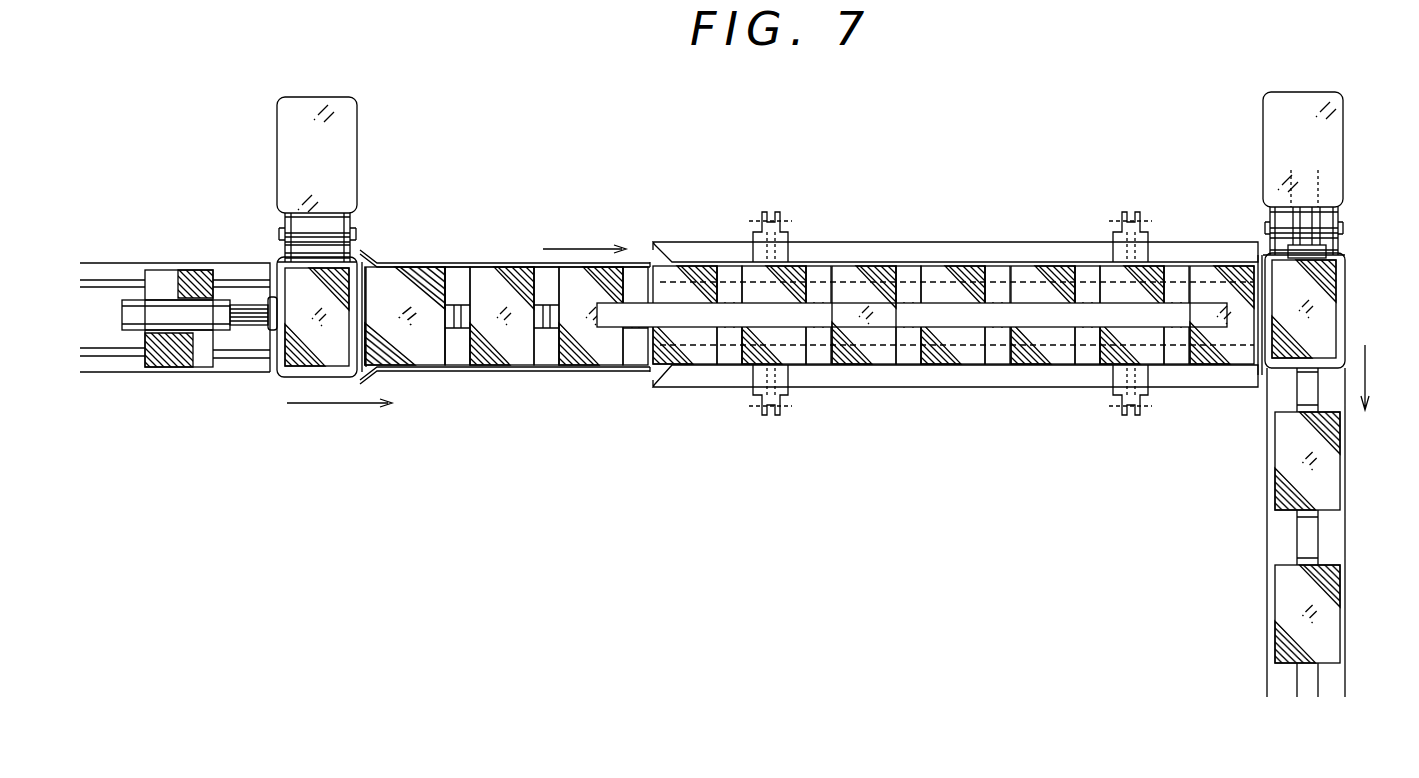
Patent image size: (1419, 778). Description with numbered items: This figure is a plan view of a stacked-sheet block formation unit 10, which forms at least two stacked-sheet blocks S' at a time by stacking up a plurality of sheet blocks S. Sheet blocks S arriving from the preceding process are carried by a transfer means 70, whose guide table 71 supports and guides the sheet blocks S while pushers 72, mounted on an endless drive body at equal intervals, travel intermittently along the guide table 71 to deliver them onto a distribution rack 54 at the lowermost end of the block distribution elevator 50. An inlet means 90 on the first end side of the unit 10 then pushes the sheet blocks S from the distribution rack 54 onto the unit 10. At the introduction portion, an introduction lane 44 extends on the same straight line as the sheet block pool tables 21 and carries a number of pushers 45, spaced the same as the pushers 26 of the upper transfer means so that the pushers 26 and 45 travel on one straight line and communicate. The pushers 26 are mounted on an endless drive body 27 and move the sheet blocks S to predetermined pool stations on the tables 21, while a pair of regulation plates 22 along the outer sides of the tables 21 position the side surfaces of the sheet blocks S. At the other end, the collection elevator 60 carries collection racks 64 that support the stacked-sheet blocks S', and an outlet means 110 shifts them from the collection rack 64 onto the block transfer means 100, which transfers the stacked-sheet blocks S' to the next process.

The stacked-sheet block formation unit 10 is at (929, 328).
The sheet block pool table 21 is at (888, 250).
The regulation plate 22 is at (1046, 253).
The pusher 26 is at (1093, 318).
The endless drive body 27 is at (993, 318).
The introduction lane 44 is at (544, 356).
The pusher 45 is at (481, 303).
The block distribution elevator 50 is at (306, 82).
The distribution rack 54 is at (280, 375).
The collection elevator 60 is at (1286, 82).
The collection rack 64 is at (1347, 308).
The transfer means 70 is at (104, 263).
The guide table 71 is at (108, 372).
The pusher 72 is at (137, 356).
The inlet means 90 is at (178, 300).
The block transfer means 100 is at (1353, 614).
The outlet means 110 is at (1268, 213).
The sheet block S is at (699, 325).
The stacked-sheet block S' is at (1334, 376).